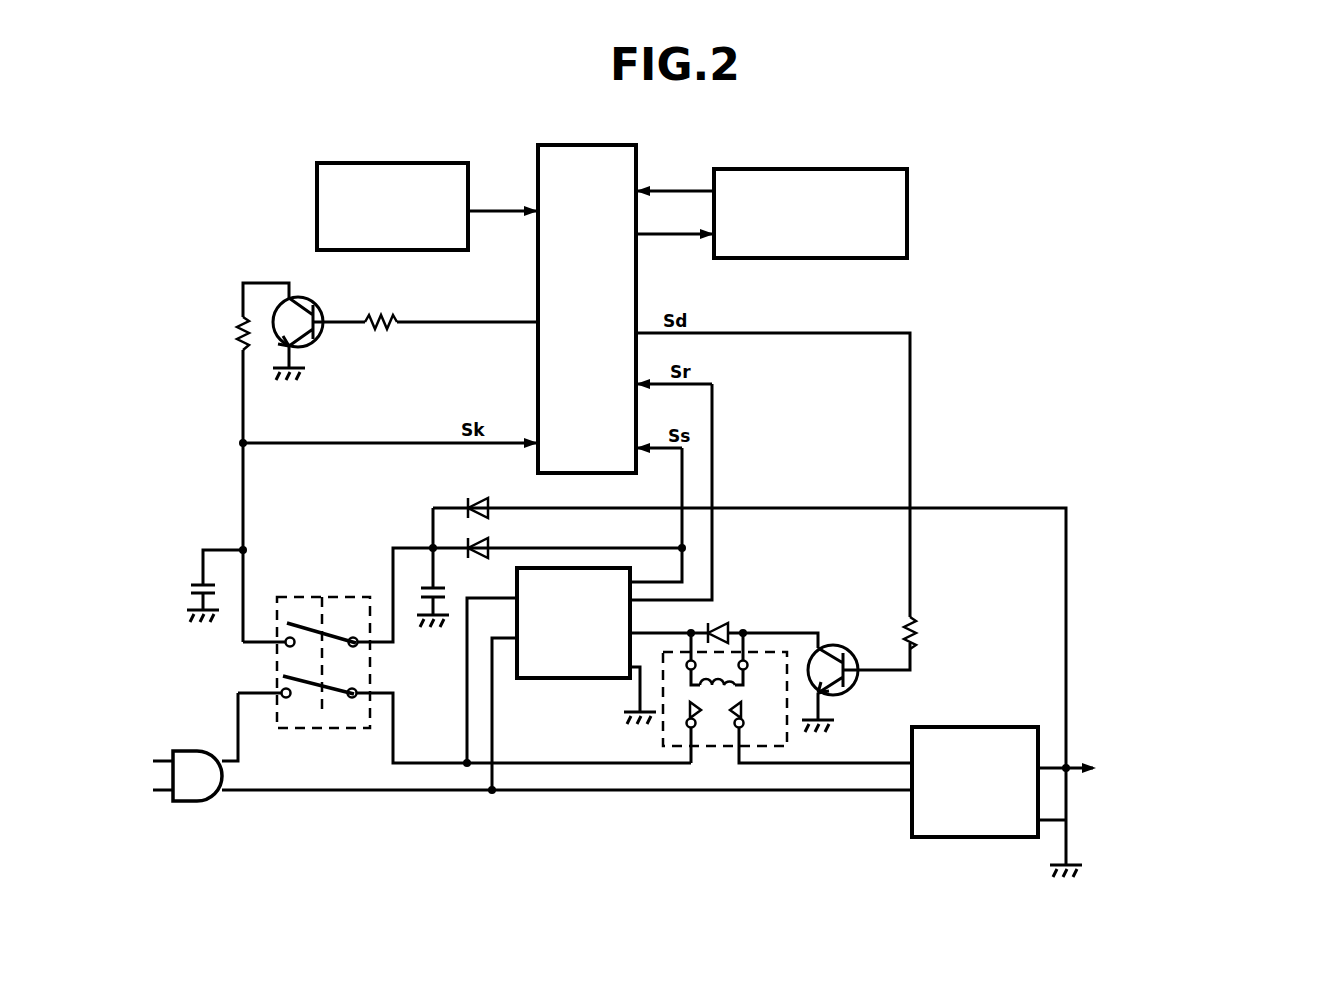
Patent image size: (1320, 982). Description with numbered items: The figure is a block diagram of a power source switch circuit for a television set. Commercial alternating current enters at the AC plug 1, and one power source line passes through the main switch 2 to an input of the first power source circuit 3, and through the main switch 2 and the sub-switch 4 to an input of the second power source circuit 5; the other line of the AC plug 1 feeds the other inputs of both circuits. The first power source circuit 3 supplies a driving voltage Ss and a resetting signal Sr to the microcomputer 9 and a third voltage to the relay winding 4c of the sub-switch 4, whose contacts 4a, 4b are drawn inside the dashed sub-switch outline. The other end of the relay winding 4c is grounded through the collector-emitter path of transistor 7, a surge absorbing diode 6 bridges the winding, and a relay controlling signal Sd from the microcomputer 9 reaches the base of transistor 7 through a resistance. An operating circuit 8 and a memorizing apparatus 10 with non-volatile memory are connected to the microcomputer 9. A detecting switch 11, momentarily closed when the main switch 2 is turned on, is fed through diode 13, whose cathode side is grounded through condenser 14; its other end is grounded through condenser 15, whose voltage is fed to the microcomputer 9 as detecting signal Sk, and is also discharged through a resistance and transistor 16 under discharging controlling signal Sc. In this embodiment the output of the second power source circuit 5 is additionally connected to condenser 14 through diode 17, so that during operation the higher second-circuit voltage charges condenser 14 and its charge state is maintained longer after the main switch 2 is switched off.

The AC plug 1 is at (190, 803).
The main switch 2 is at (292, 700).
The first power source circuit 3 is at (566, 679).
The sub-switch 4 is at (787, 730).
The sub switch contact 4a is at (682, 723).
The sub switch contact 4b is at (821, 728).
The relay winding 4c is at (717, 659).
The second power source circuit 5 is at (998, 727).
The surge absorbing diode 6 is at (733, 625).
The transistor 7 is at (838, 645).
The operating circuit 8 is at (469, 180).
The microcomputer 9 is at (637, 172).
The memorizing apparatus 10 is at (907, 177).
The detecting switch 11 is at (330, 622).
The diode 13 is at (492, 546).
The condenser 14 is at (446, 592).
The condenser 15 is at (192, 586).
The transistor 16 is at (310, 303).
The diode 17 is at (479, 497).